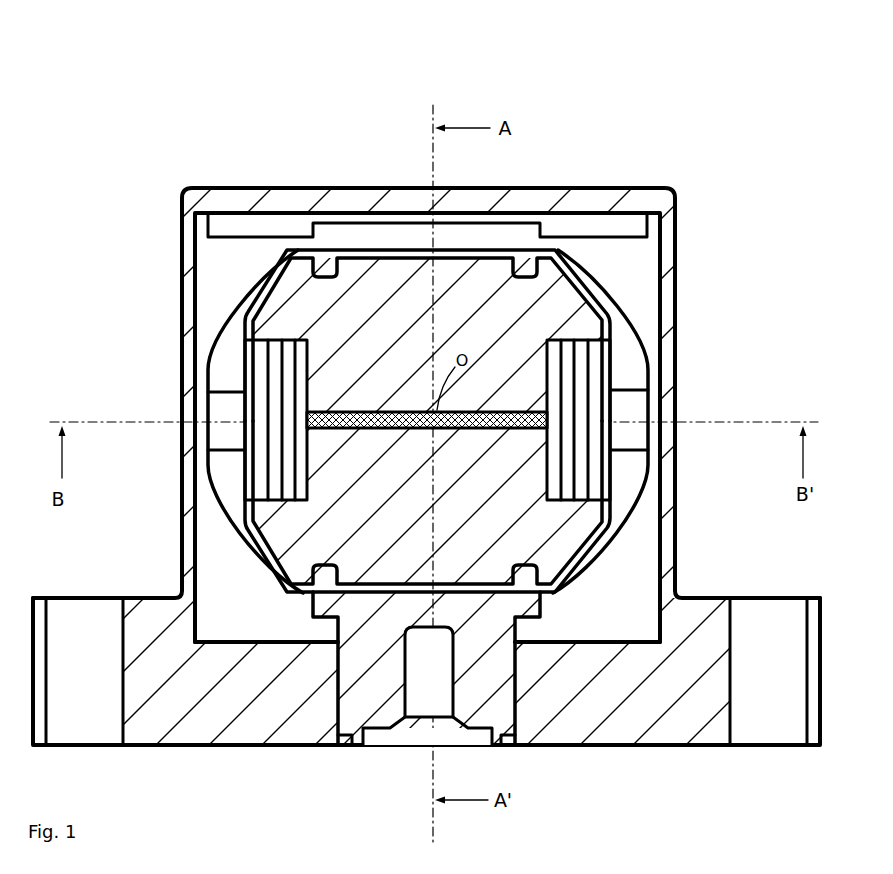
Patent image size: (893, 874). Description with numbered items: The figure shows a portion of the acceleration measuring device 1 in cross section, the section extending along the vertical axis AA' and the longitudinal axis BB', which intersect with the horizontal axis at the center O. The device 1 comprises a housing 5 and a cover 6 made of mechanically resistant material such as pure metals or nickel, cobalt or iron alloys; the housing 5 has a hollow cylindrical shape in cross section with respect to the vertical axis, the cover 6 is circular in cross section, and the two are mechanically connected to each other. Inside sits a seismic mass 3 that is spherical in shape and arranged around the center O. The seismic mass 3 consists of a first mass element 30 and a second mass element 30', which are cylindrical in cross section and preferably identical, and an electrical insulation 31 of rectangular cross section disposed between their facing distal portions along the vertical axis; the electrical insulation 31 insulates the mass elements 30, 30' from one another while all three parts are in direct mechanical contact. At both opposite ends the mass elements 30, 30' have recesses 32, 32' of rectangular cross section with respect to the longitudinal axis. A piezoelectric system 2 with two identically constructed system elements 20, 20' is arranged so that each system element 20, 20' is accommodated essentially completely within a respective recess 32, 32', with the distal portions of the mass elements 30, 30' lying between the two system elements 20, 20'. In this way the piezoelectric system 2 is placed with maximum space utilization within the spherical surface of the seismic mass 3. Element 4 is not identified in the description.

The acceleration measuring device 1 is at (160, 157).
The piezoelectric system 2 is at (762, 325).
The system element 20 is at (659, 415).
The system element 20' is at (514, 420).
The seismic mass 3 is at (402, 82).
The first mass element 30 is at (446, 437).
The electrical insulation 31 is at (362, 410).
The second mass element 30' is at (446, 437).
The recess 32 is at (427, 269).
The recess 32' is at (450, 616).
The rotor cup 4 is at (228, 367).
The housing 5 is at (148, 633).
The cover 6 is at (622, 205).